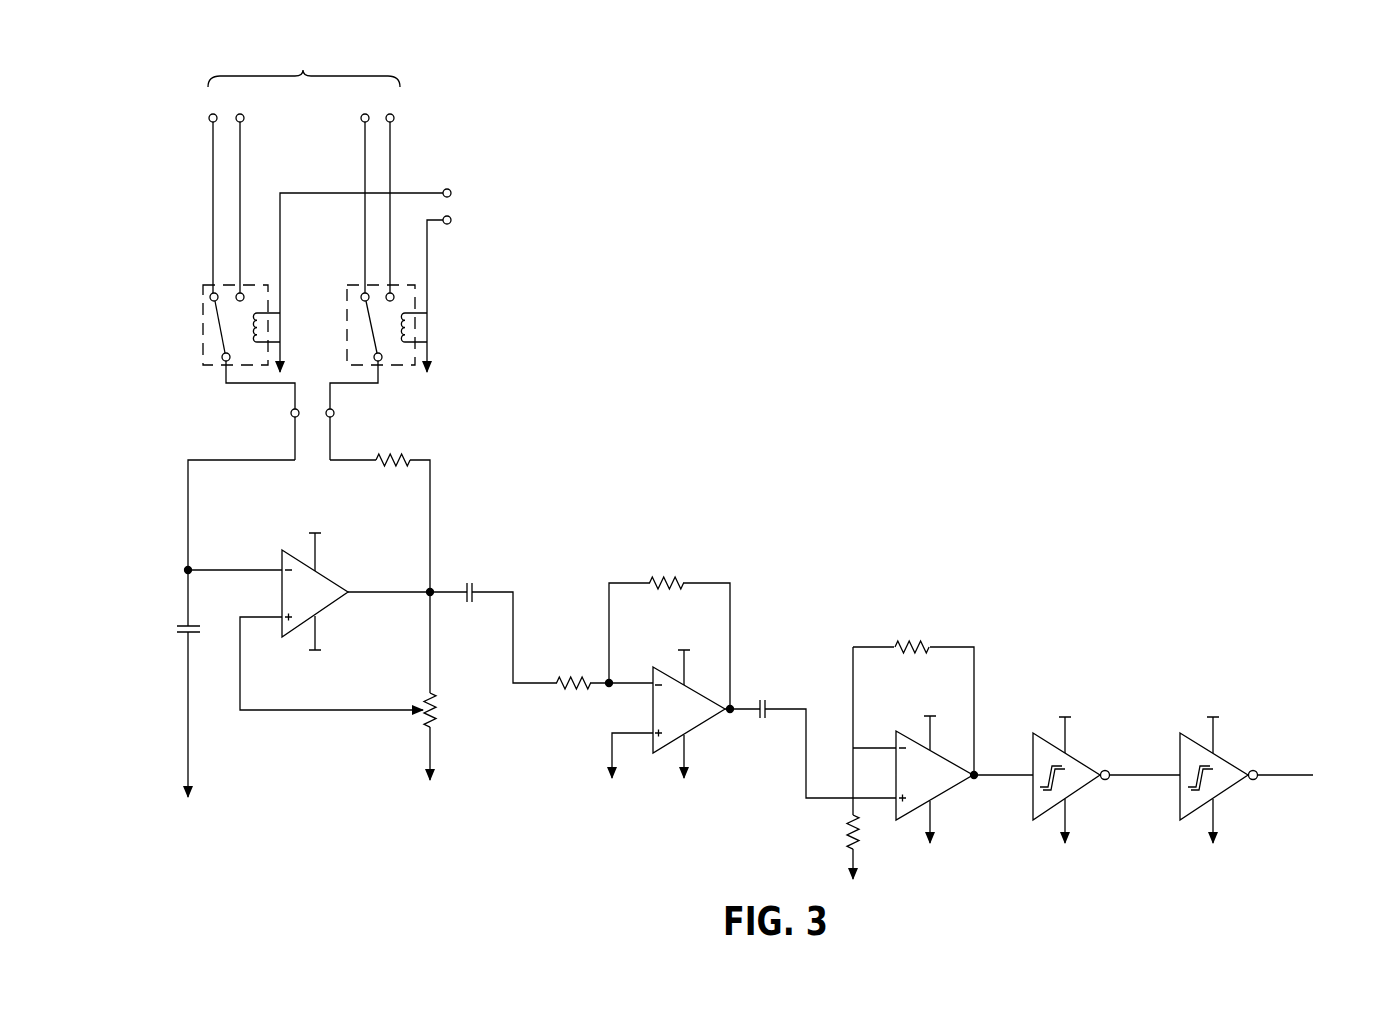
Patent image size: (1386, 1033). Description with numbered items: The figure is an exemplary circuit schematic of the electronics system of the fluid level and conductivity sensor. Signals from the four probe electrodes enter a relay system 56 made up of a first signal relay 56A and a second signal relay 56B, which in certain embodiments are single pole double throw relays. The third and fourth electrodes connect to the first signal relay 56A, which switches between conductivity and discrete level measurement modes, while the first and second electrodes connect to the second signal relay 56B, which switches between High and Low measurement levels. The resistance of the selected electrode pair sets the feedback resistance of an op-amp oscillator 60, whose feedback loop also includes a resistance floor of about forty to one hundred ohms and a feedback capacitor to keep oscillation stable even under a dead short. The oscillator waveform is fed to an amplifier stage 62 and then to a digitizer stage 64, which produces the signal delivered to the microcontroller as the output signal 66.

The relay system 56 is at (513, 127).
The first signal relay 56A is at (197, 374).
The second signal relay 56B is at (408, 379).
The oscillator 60 is at (443, 516).
The amplifier stage 62 is at (912, 554).
The digitizer stage 64 is at (1213, 650).
The output signal 66 is at (1348, 743).